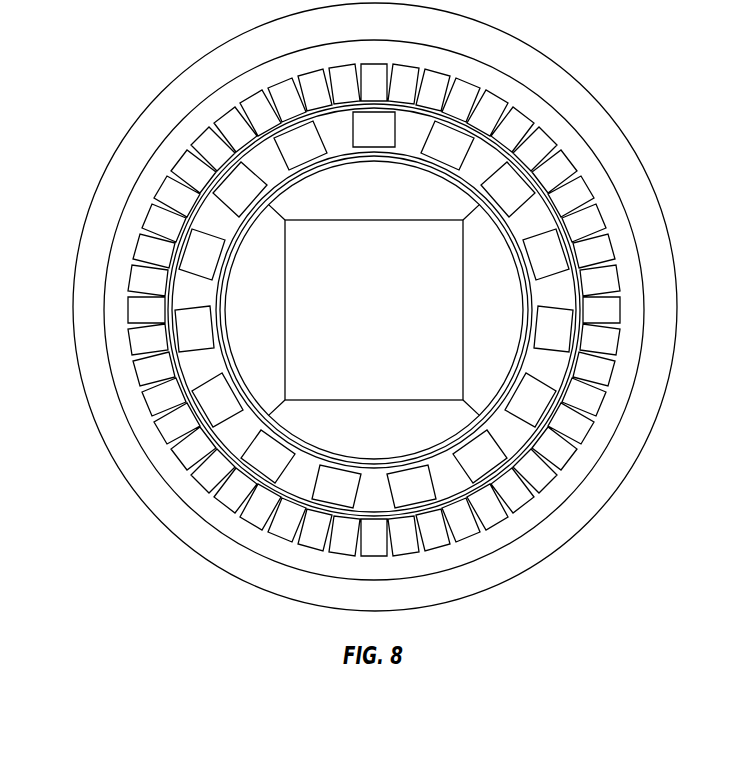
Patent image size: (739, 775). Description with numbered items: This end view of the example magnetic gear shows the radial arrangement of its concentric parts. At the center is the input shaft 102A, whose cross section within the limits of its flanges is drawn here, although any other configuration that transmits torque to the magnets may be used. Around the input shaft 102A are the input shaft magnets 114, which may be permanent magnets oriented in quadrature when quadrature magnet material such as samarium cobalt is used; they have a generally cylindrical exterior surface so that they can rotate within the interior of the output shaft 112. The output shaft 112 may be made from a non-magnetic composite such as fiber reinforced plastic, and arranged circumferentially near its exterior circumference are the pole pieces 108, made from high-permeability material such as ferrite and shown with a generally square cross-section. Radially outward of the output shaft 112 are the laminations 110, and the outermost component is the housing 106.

The input shaft 102A is at (323, 327).
The housing 106 is at (110, 192).
The pole pieces 108 is at (263, 160).
The laminations 110 is at (120, 265).
The output shaft 112 is at (266, 158).
The input shaft magnets 114 is at (407, 192).